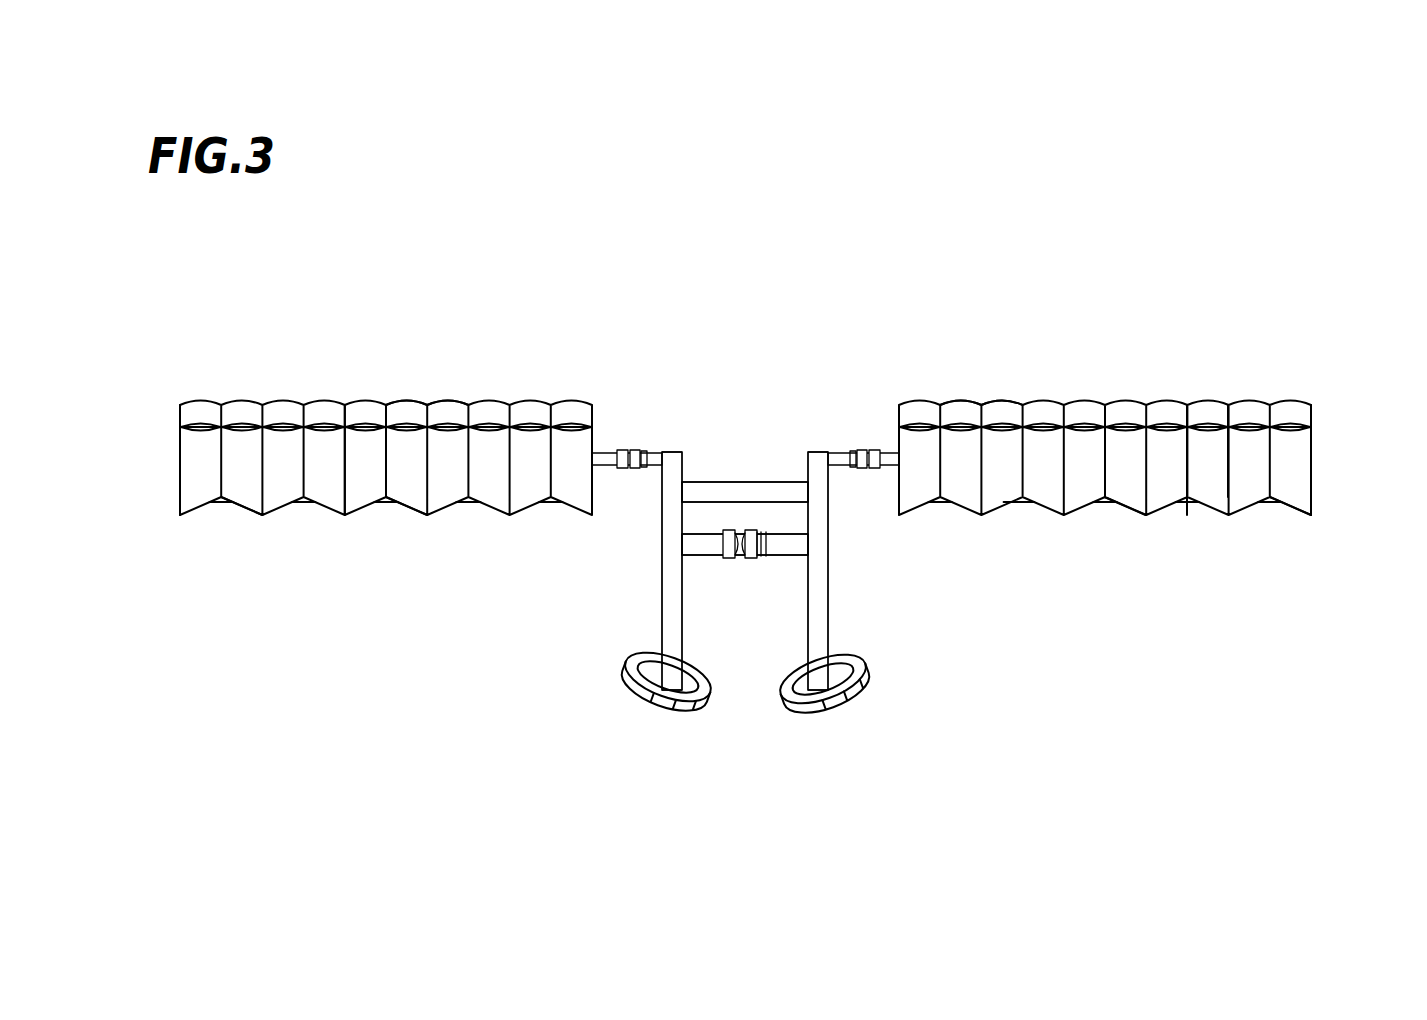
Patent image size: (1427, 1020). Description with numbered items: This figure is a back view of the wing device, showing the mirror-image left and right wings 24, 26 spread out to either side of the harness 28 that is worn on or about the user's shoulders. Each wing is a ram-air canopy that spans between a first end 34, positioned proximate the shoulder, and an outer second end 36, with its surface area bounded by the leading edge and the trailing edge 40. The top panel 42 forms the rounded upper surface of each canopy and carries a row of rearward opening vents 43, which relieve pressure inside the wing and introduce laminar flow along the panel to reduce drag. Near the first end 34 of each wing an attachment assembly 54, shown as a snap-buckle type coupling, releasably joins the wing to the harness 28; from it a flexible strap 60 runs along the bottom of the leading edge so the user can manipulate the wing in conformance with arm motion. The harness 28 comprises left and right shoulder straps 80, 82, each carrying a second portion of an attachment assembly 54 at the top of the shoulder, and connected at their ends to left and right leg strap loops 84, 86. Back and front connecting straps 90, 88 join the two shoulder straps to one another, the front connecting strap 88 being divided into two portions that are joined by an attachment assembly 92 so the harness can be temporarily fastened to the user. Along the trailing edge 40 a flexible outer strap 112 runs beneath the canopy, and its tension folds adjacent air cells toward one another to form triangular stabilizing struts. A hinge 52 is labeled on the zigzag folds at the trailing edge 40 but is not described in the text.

The left wing 24 is at (328, 378).
The right wing 26 is at (1113, 360).
The harness 28 is at (660, 603).
The first end 34 is at (605, 452).
The second end 36 is at (180, 452).
The trailing edge 40 is at (245, 512).
The top panel 42 is at (360, 497).
The rearward opening vents 43 is at (448, 430).
The hinge 52 is at (410, 512).
The attachment assembly 54 is at (631, 450).
The flexible strap 60 is at (597, 467).
The left shoulder strap 80 is at (676, 452).
The right shoulder strap 82 is at (815, 452).
The left leg strap loop 84 is at (633, 688).
The right leg strap loop 86 is at (860, 683).
The front connecting strap 88 is at (787, 547).
The back connecting strap 90 is at (752, 482).
The attachment assembly 92 is at (750, 557).
The flexible outer strap 112 is at (468, 507).